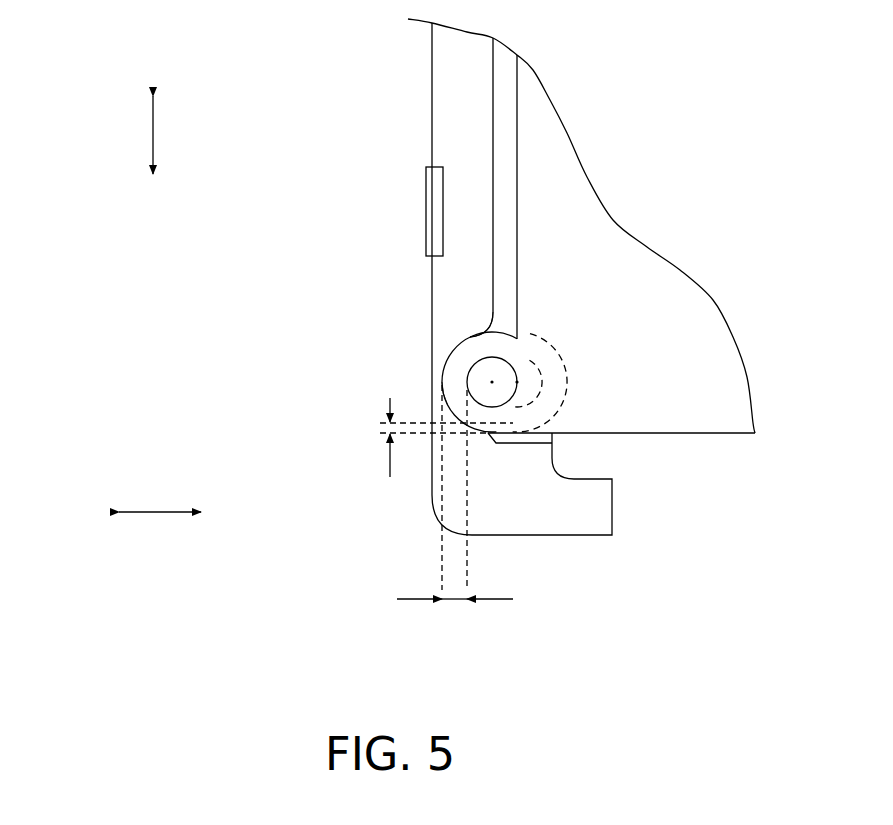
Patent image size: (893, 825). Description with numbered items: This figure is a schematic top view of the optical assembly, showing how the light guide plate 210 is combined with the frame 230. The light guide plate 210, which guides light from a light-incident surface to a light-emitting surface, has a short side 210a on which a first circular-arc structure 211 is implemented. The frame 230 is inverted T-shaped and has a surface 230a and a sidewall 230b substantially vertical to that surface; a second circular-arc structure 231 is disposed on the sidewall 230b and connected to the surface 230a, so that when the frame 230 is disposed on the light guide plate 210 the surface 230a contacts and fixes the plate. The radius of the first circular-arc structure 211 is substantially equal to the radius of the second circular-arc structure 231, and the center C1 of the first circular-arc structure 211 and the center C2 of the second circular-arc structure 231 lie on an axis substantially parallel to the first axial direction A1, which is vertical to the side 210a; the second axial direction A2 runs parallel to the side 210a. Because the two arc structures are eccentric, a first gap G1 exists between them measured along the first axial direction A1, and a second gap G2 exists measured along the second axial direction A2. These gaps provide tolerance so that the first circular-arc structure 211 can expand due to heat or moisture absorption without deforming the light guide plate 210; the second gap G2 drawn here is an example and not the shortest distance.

The light guide plate 210 is at (617, 260).
The side of the light guide plate 210a is at (517, 102).
The first circular-arc structure 211 is at (510, 425).
The frame 230 is at (404, 215).
The surface of the frame 230a is at (458, 347).
The sidewall of the frame 230b is at (450, 332).
The second circular-arc structure 231 is at (443, 383).
The center of the first circular-arc structure C1 is at (534, 383).
The center of the second circular-arc structure C2 is at (493, 398).
The first gap G1 is at (455, 512).
The second gap G2 is at (429, 437).
The first axial direction A1 is at (153, 516).
The second axial direction A2 is at (150, 130).